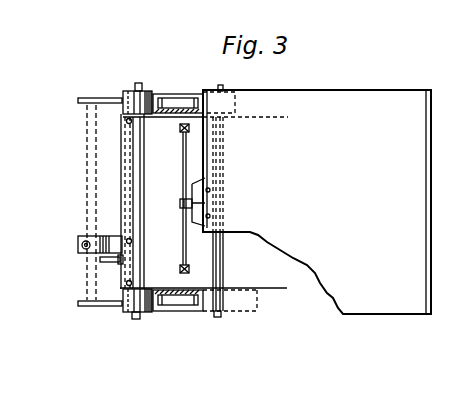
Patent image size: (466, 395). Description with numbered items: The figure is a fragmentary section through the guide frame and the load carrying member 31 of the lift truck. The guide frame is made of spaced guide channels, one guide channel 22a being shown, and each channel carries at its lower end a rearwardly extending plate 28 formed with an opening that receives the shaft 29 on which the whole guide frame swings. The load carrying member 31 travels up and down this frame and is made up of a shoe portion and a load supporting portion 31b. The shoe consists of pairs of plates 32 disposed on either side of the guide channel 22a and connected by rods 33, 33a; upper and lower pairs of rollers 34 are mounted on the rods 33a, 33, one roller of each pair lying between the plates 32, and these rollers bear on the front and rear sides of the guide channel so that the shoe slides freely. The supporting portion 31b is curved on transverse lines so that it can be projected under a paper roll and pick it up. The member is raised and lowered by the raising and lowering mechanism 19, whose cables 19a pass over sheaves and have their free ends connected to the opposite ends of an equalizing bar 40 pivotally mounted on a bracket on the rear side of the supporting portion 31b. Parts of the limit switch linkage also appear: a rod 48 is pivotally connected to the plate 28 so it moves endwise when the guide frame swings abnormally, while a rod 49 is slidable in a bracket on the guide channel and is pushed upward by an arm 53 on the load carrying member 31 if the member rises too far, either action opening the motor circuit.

The rearwardly extending plate 28 is at (102, 97).
The shaft 29 is at (86, 183).
The load carrying member 31 is at (233, 86).
The load supporting portion 31b is at (403, 93).
The plates 32 is at (183, 94).
The rod 33 is at (221, 262).
The rod 33a is at (138, 212).
The rollers 34 is at (126, 91).
The guide channel 22a is at (167, 94).
The raising and lowering mechanism 19 is at (180, 268).
The cables 19a is at (182, 135).
The equalizing bar 40 is at (192, 212).
The rod 48 is at (100, 260).
The rod 49 is at (79, 247).
The arm 53 is at (80, 240).